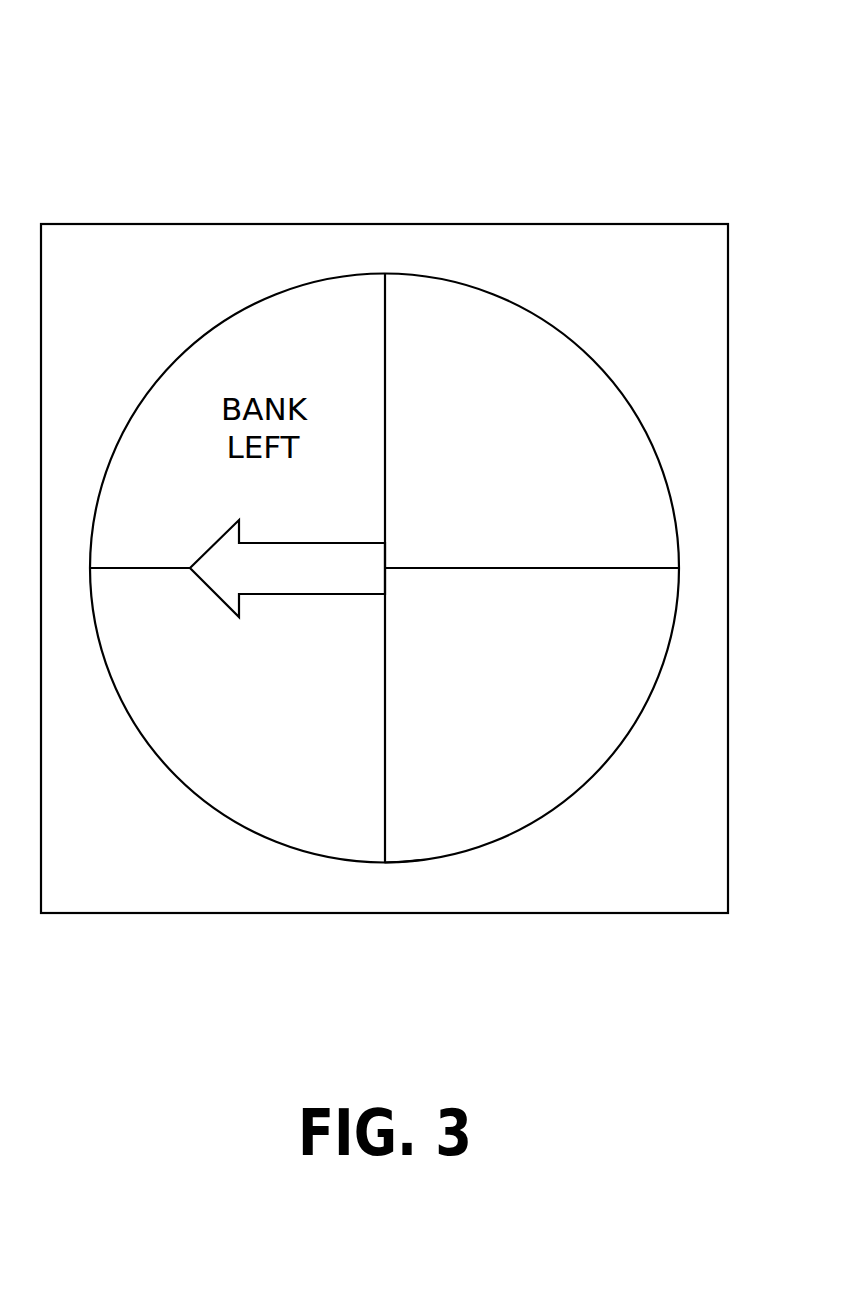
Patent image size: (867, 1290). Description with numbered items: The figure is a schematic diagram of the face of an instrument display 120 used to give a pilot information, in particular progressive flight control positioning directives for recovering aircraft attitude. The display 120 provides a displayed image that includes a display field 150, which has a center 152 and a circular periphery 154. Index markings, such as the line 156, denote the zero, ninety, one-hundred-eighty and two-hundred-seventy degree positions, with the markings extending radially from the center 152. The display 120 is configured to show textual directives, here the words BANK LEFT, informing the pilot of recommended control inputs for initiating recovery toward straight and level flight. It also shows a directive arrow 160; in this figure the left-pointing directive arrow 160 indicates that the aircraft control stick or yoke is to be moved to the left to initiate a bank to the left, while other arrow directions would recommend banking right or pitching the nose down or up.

The instrument display 120 is at (605, 127).
The display field 150 is at (556, 297).
The center 152 is at (386, 565).
The circular periphery 154 is at (407, 863).
The line 156 is at (386, 790).
The directive arrow 160 is at (322, 608).